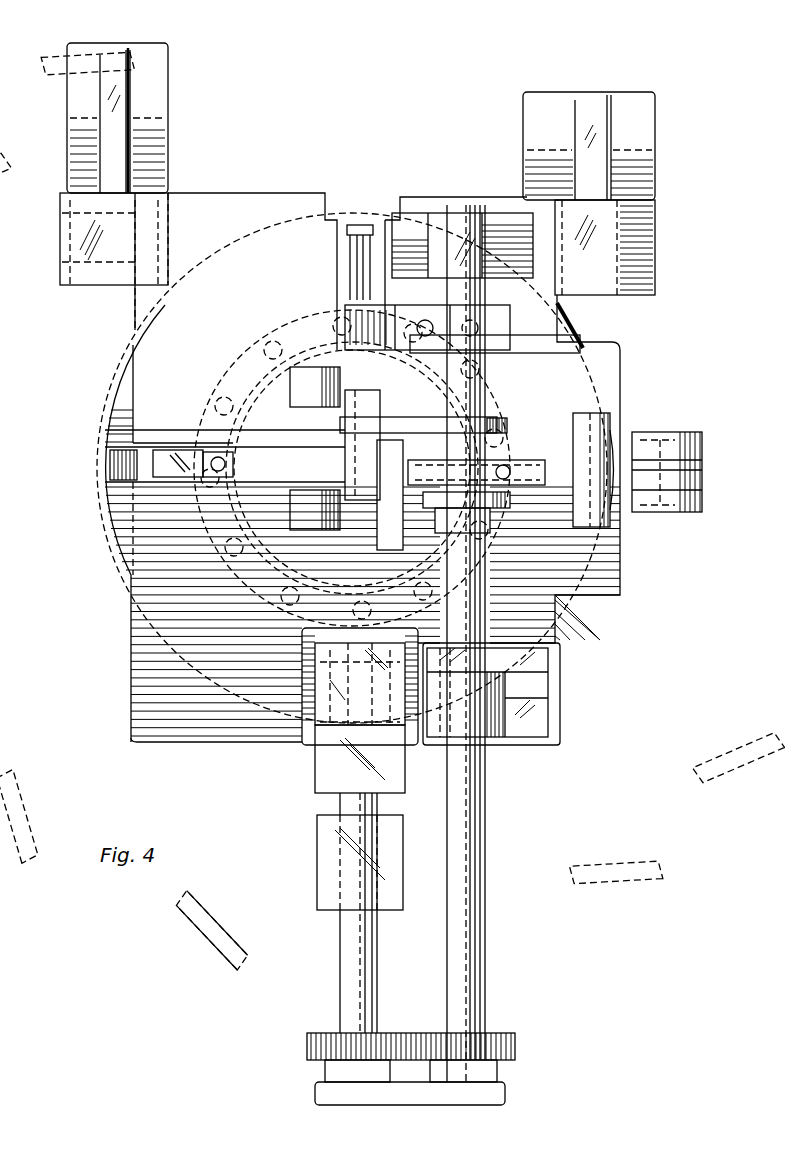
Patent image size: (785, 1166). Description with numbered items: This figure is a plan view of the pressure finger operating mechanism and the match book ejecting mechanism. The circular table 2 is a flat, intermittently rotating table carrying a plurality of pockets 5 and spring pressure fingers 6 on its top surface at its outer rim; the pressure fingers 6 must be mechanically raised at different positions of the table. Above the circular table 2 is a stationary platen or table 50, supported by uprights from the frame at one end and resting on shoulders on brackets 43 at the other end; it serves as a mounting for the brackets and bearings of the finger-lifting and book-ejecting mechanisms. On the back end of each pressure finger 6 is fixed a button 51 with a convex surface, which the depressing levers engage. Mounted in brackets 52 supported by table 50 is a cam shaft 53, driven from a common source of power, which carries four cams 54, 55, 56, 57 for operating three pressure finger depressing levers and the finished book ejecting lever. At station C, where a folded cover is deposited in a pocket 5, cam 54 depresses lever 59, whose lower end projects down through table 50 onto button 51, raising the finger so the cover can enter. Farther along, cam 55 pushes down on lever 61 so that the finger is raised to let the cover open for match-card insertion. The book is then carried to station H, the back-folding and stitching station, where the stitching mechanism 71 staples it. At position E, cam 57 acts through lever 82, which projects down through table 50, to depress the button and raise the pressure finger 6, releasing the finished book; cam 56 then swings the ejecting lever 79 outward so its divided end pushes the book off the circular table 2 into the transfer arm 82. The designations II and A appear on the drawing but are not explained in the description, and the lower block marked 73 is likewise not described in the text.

The circular table 2 is at (125, 552).
The pocket 5 is at (130, 428).
The pressure finger 6 is at (243, 305).
The section line II is at (101, 513).
The bracket 43 is at (78, 285).
The stationary table 50 is at (276, 742).
The button 51 is at (284, 347).
The bracket 52 is at (483, 213).
The cam shaft 53 is at (485, 785).
The cam 54 is at (562, 316).
The cam 55 is at (560, 420).
The cam 56 is at (520, 467).
The cam 57 is at (510, 508).
The lever 59 is at (355, 318).
The lever 61 is at (385, 415).
The stitching mechanism 71 is at (315, 770).
The base block 73 is at (317, 865).
The ejecting lever 79 is at (545, 437).
The lever 82 is at (672, 512).
The station C is at (361, 265).
The position E is at (624, 478).
The station H is at (360, 686).
The block A is at (409, 495).